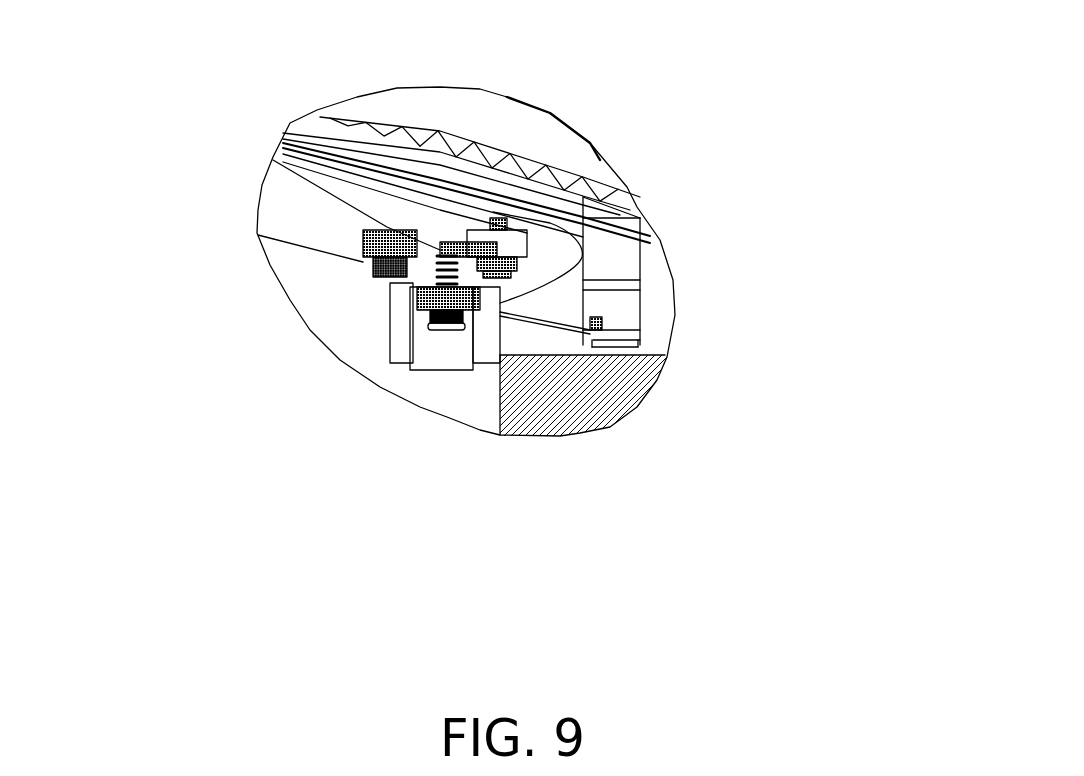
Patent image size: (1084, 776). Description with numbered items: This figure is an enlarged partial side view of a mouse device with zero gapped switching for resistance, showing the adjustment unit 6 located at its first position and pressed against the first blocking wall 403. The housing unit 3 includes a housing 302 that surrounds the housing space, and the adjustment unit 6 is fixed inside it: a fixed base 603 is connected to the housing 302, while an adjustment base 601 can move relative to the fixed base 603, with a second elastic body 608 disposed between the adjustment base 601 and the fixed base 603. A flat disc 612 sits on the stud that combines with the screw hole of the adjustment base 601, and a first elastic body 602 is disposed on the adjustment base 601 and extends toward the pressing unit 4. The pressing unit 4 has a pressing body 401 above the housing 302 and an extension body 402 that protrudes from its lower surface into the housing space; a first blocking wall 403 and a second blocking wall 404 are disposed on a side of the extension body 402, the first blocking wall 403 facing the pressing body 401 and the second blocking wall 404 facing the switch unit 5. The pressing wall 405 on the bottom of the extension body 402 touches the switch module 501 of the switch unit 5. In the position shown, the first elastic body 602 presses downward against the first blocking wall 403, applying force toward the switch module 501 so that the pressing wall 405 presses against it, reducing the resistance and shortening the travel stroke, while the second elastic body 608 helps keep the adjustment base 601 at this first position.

The housing unit 3 is at (140, 87).
The housing 302 is at (297, 155).
The fixed base 603 is at (273, 160).
The adjustment unit 6 is at (138, 510).
The second elastic body 608 is at (425, 266).
The adjustment base 601 is at (420, 303).
The flat disc 612 is at (425, 317).
The first elastic body 602 is at (500, 317).
The pressing unit 4 is at (793, 100).
The pressing body 401 is at (637, 202).
The extension body 402 is at (627, 268).
The second blocking wall 404 is at (640, 287).
The first blocking wall 403 is at (637, 333).
The pressing wall 405 is at (622, 347).
The switch unit 5 is at (570, 565).
The switch module 501 is at (610, 347).